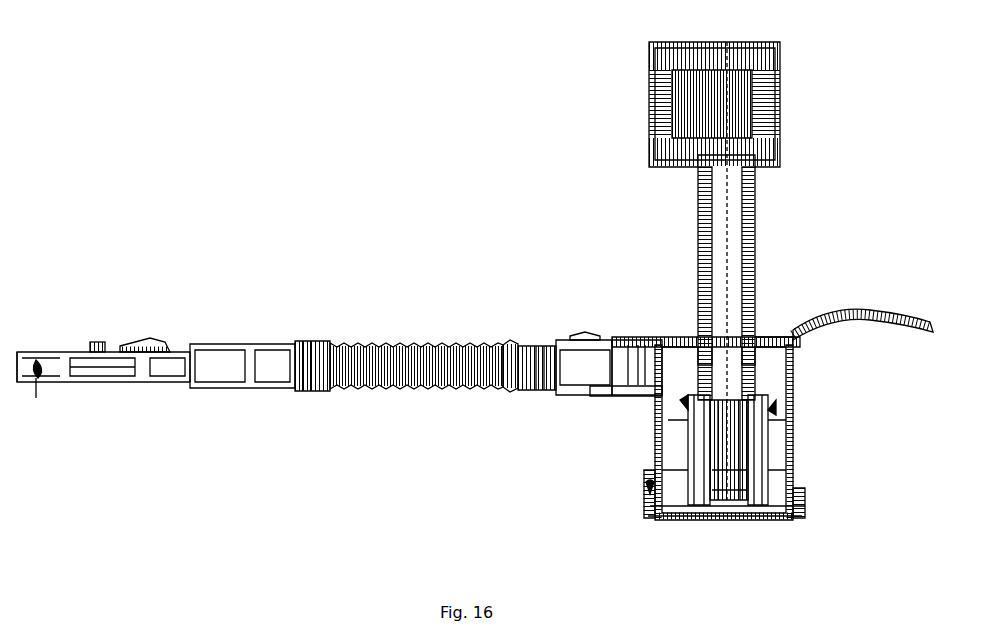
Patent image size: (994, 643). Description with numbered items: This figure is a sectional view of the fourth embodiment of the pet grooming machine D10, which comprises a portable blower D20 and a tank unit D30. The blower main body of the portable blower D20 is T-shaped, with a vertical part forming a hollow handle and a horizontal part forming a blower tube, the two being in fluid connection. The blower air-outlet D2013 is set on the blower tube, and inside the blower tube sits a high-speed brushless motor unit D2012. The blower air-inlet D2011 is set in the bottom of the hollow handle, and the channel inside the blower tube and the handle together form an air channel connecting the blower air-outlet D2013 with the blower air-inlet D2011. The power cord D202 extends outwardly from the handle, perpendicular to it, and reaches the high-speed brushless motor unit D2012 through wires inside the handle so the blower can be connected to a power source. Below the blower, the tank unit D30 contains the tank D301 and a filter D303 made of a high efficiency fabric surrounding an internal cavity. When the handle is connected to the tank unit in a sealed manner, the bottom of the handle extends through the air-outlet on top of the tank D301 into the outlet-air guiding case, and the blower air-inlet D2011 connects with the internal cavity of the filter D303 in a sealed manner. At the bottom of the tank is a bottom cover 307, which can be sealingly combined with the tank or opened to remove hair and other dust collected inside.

The pet grooming machine D10 is at (142, 82).
The portable blower D20 is at (726, 271).
The blower air-outlet D2013 is at (665, 78).
The high-speed brushless motor unit D2012 is at (670, 107).
The blower air-inlet D2011 is at (795, 372).
The power cord D202 is at (877, 310).
The tank unit D30 is at (688, 448).
The tank D301 is at (772, 423).
The filter D303 is at (700, 437).
The bottom cover 307 is at (795, 518).